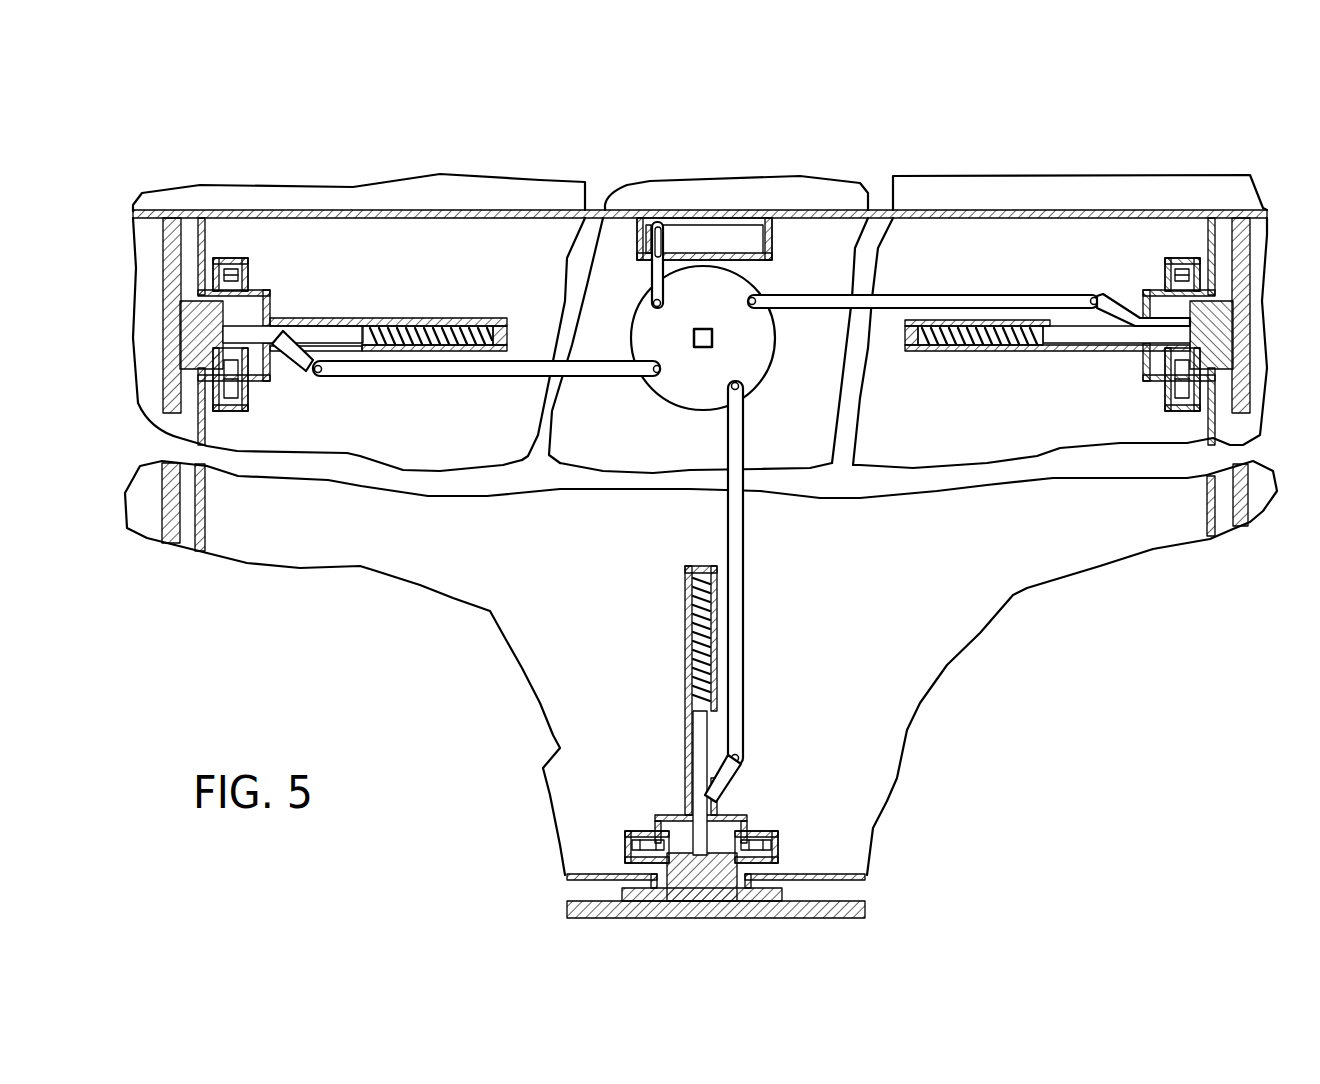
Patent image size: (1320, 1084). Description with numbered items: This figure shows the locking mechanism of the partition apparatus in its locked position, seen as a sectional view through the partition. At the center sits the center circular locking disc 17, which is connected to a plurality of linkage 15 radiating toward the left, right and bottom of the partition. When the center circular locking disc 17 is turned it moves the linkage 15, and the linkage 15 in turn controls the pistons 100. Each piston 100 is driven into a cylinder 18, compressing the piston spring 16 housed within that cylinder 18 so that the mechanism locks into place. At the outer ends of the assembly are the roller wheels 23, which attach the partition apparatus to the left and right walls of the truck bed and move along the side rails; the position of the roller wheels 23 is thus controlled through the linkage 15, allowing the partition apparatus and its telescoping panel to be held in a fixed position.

The linkage 15 is at (817, 297).
The piston spring 16 is at (493, 325).
The center circular locking disc 17 is at (635, 308).
The cylinder 18 is at (372, 322).
The roller wheels 23 is at (233, 287).
The piston 100 is at (282, 327).